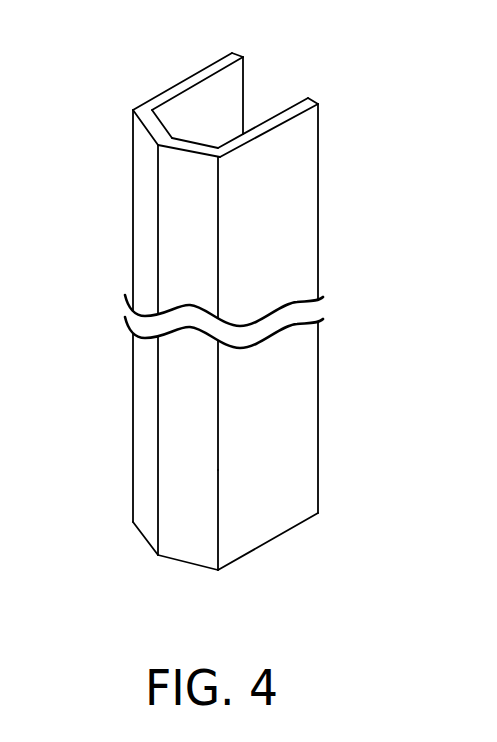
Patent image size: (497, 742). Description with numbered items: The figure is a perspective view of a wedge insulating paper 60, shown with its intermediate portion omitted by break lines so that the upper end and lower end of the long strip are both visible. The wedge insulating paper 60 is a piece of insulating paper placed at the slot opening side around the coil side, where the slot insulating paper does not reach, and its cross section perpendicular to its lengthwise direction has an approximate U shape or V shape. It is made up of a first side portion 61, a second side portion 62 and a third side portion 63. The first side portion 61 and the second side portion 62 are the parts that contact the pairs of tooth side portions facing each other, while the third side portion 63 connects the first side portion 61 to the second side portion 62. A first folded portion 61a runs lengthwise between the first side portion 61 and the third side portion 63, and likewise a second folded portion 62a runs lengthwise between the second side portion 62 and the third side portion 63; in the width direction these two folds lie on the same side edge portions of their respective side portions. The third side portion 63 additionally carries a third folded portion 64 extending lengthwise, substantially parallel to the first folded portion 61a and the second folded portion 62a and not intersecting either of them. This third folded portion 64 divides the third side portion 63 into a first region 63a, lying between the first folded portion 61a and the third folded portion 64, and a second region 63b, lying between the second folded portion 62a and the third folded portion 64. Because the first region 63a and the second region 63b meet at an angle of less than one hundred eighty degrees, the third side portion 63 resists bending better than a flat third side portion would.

The wedge insulating paper 60 is at (95, 145).
The first side portion 61 is at (227, 93).
The first folded portion 61a is at (130, 215).
The second side portion 62 is at (297, 195).
The second folded portion 62a is at (218, 430).
The third side portion 63 is at (207, 585).
The first region 63a is at (138, 430).
The second region 63b is at (198, 503).
The third folded portion 64 is at (157, 505).